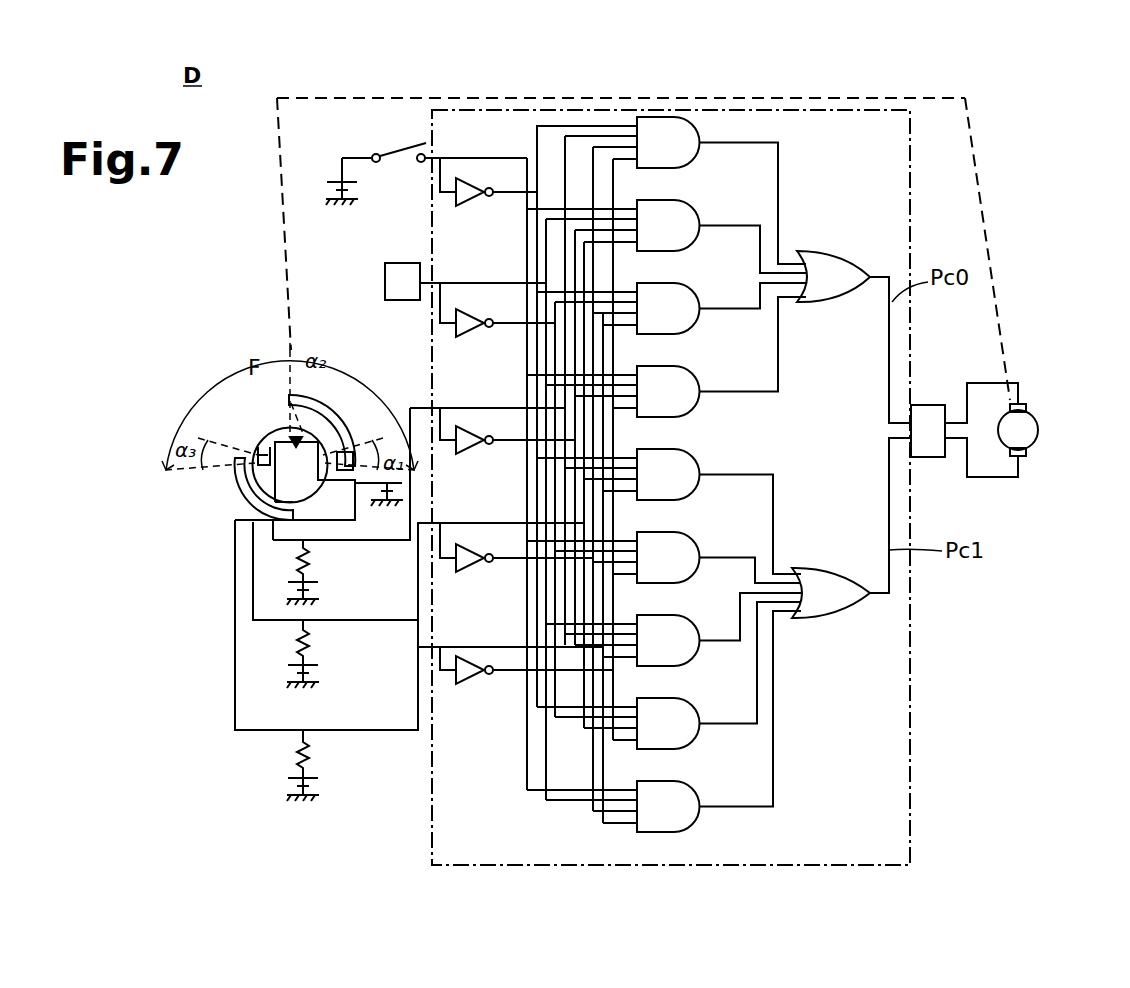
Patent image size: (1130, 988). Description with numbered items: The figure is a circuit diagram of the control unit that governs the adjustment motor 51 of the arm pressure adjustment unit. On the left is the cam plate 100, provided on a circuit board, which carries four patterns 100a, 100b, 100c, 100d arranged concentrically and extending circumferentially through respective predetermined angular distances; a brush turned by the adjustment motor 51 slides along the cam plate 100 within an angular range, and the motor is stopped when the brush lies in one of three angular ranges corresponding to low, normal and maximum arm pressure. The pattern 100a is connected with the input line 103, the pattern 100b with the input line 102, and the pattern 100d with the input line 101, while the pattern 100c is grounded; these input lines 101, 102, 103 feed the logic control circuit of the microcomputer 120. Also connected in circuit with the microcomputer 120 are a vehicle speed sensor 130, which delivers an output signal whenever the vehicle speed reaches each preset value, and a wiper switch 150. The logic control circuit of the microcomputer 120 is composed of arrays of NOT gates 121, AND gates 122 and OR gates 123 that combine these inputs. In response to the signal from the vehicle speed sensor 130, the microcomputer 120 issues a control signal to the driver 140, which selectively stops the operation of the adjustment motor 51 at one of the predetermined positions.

The wiper switch 150 is at (413, 145).
The vehicle speed sensor 130 is at (375, 286).
The microcomputer 120 is at (592, 108).
The NOT gates 121 is at (466, 204).
The AND gates 122 is at (690, 116).
The OR gate 123 is at (820, 262).
The driver 140 is at (925, 415).
The adjustment motor 51 is at (1040, 430).
The cam plate 100 is at (280, 468).
The pattern 100a is at (337, 420).
The pattern 100b is at (354, 518).
The pattern 100c is at (265, 432).
The pattern 100d is at (275, 457).
The input line 101 is at (272, 483).
The input line 102 is at (250, 568).
The input line 103 is at (237, 676).